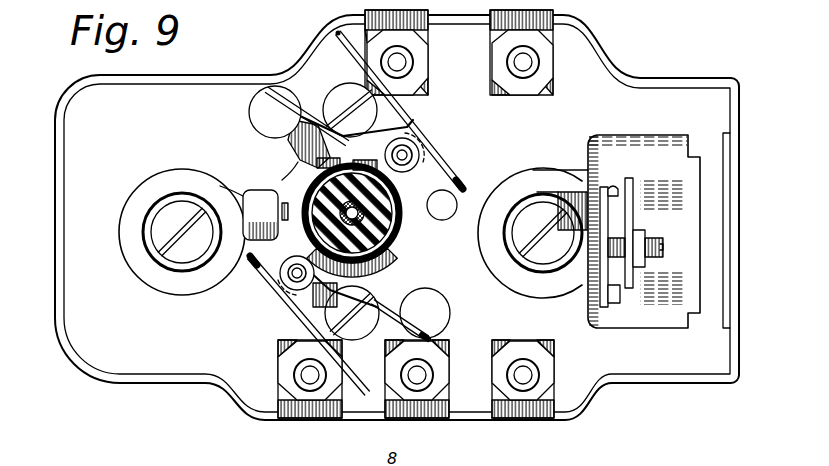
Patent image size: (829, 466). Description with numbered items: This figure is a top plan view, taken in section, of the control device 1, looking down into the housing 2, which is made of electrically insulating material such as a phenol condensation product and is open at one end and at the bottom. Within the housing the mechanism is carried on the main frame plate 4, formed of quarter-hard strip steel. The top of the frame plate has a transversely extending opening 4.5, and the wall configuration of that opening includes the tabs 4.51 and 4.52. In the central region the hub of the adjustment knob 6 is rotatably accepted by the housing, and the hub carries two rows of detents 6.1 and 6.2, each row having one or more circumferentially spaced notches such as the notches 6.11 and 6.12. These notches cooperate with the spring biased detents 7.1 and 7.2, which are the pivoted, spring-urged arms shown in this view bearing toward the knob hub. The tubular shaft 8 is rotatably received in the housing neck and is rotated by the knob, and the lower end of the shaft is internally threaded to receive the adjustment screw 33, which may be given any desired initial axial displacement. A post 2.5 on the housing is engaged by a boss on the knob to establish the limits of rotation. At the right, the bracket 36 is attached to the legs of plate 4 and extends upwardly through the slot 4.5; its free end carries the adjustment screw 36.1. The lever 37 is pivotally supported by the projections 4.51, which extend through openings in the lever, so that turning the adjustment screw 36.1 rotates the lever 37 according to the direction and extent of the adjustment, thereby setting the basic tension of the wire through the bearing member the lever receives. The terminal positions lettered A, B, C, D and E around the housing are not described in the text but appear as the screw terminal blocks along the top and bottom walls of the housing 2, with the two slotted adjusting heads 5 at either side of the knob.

The control device 1 is at (72, 100).
The housing 2 is at (77, 202).
The post 2.5 is at (253, 212).
The main frame plate 4 is at (670, 200).
The transversely extending opening 4.5 is at (614, 188).
The tabs 4.51 is at (588, 214).
The tab 4.52 is at (597, 278).
The adjusting knob 5 is at (163, 227).
The adjustment knob 6 is at (396, 190).
The row of detents 6.1 is at (380, 271).
The notch 6.11 is at (290, 186).
The notch 6.12 is at (298, 152).
The row of detents 6.2 is at (403, 233).
The spring biased detent 7.1 is at (462, 178).
The spring biased detent 7.2 is at (262, 268).
The tubular shaft 8 is at (344, 162).
The adjustment screw 33 is at (391, 152).
The bracket 36 is at (630, 277).
The adjustment screw 36.1 is at (660, 237).
The lever 37 is at (603, 300).
The terminal A is at (312, 400).
The terminal B is at (422, 400).
The terminal C is at (528, 400).
The terminal D is at (389, 38).
The terminal E is at (525, 40).